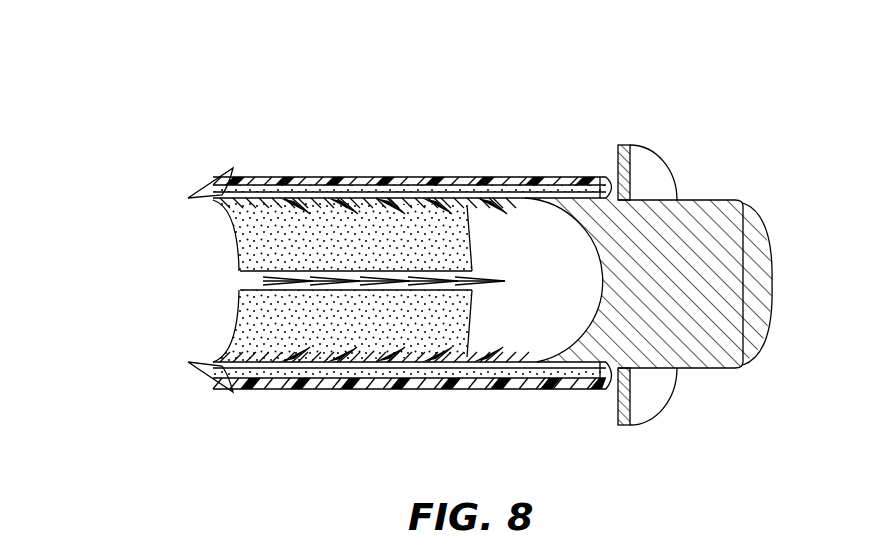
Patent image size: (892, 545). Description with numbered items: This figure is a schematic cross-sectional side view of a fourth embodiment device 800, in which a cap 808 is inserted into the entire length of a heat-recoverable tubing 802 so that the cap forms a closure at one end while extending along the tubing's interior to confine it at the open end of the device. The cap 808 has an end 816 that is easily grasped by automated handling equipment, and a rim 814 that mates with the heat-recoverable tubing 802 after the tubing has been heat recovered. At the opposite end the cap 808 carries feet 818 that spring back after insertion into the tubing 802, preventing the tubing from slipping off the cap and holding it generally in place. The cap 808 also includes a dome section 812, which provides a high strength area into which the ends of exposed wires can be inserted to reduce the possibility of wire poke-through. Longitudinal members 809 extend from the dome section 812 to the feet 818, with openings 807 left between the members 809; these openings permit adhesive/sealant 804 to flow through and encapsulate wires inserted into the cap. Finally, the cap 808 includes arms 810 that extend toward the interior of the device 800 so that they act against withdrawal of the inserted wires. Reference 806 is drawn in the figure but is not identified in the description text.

The device 800 is at (286, 82).
The heat-recoverable tubing 802 is at (311, 177).
The adhesive/sealant 804 is at (512, 177).
The inner sheath layer 806 is at (367, 177).
The openings 807 is at (263, 227).
The cap 808 is at (147, 163).
The longitudinal members 809 is at (252, 177).
The arms 810 is at (240, 276).
The dome section 812 is at (607, 203).
The rim 814 is at (647, 165).
The end 816 is at (708, 218).
The feet 818 is at (220, 188).